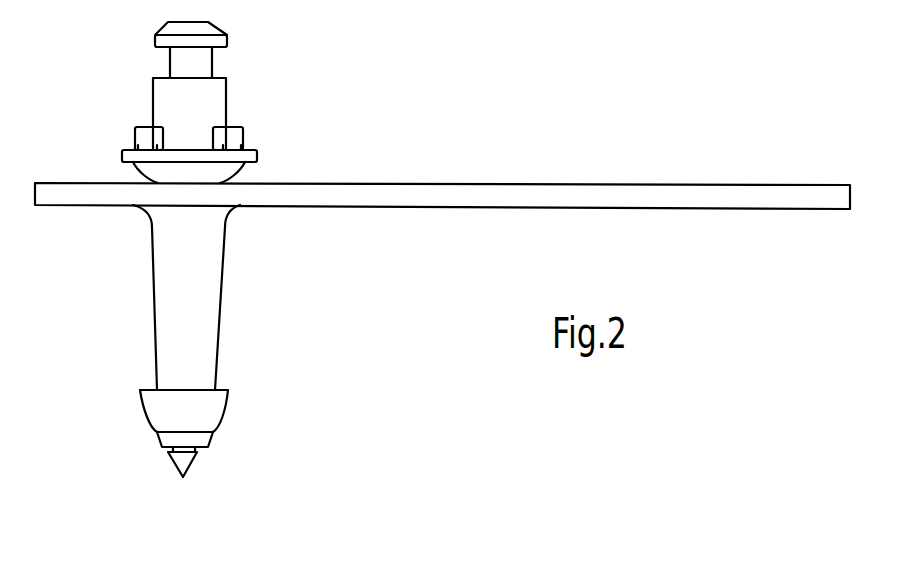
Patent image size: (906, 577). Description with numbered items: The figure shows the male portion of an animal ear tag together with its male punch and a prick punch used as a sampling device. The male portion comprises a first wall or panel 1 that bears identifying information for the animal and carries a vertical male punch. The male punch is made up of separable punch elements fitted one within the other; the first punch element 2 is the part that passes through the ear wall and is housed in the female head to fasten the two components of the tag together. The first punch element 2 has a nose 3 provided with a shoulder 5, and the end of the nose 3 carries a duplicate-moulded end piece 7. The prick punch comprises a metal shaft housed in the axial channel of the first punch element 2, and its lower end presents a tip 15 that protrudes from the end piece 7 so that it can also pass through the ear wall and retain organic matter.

The first wall or panel 1 is at (447, 197).
The first punch element 2 is at (193, 297).
The nose 3 is at (225, 413).
The shoulder 5 is at (152, 388).
The end piece 7 is at (168, 438).
The tip 15 is at (192, 463).